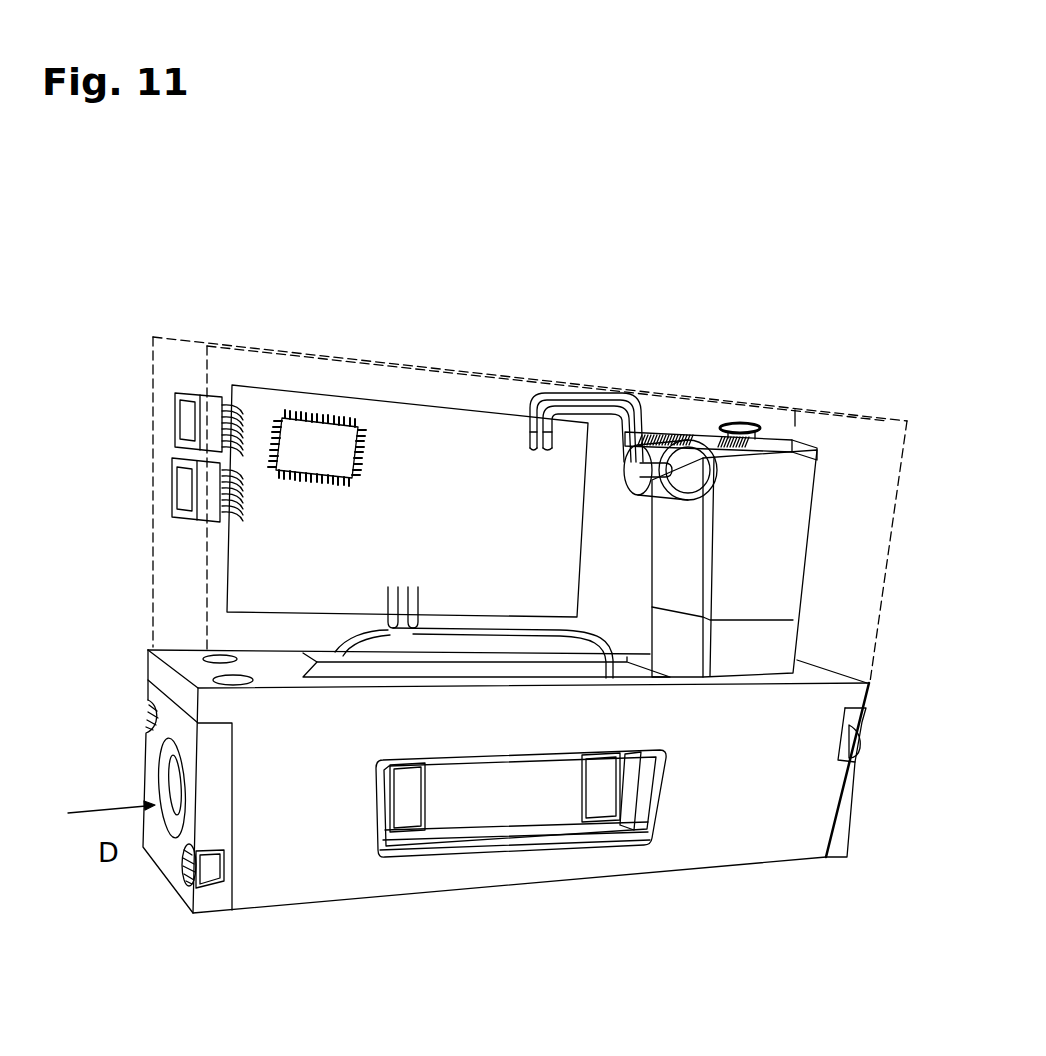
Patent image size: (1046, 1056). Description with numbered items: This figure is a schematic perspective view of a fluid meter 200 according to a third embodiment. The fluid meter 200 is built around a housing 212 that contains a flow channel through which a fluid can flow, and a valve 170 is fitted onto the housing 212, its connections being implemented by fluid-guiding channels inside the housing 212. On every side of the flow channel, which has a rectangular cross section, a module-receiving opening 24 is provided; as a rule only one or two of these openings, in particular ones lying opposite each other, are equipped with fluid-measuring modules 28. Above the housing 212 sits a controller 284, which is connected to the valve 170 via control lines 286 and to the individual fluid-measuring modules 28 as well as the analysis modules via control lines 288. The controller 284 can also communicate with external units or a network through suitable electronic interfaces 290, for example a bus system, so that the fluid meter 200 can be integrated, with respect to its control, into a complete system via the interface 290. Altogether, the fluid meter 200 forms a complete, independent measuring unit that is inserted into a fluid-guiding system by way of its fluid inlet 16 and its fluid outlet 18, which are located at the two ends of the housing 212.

The fluid meter 200 is at (163, 215).
The controller 284 is at (303, 440).
The module-receiving opening 24 is at (397, 663).
The control lines 286 is at (610, 393).
The electronic interfaces 290 is at (185, 420).
The valve 170 is at (848, 505).
The control lines 288 is at (303, 653).
The fluid inlet 16 is at (170, 783).
The fluid outlet 18 is at (860, 778).
The housing 212 is at (740, 852).
The fluid-measuring module 28 is at (472, 817).